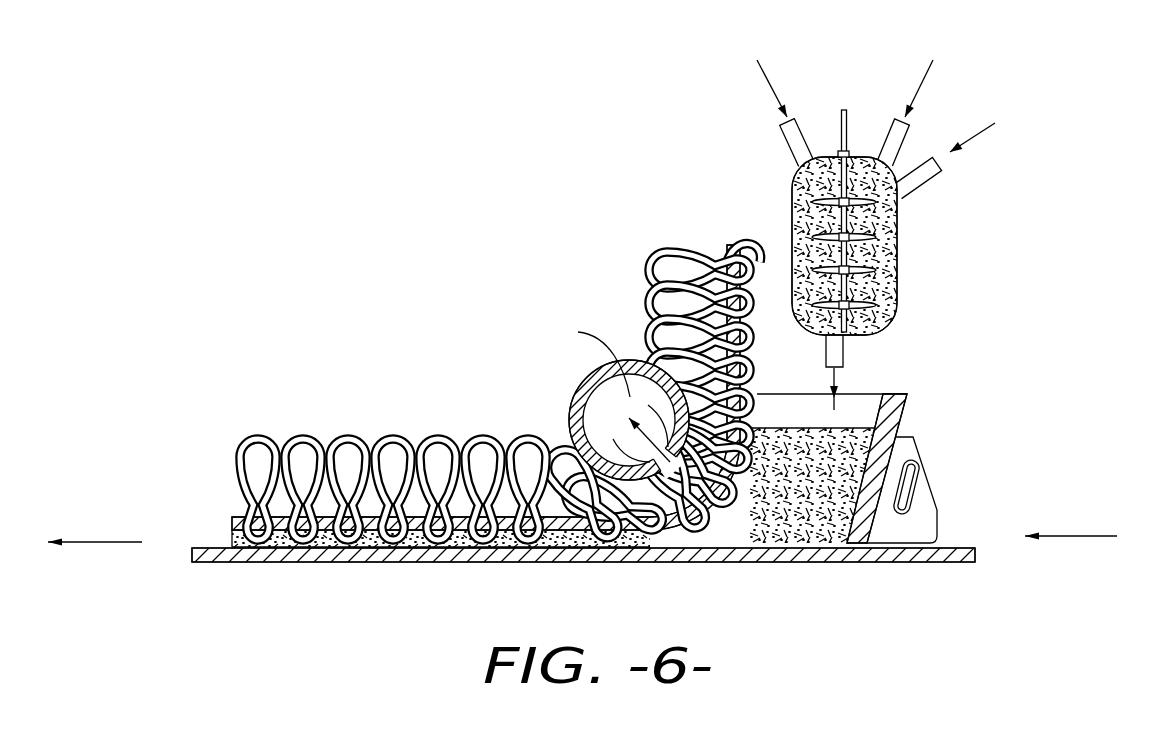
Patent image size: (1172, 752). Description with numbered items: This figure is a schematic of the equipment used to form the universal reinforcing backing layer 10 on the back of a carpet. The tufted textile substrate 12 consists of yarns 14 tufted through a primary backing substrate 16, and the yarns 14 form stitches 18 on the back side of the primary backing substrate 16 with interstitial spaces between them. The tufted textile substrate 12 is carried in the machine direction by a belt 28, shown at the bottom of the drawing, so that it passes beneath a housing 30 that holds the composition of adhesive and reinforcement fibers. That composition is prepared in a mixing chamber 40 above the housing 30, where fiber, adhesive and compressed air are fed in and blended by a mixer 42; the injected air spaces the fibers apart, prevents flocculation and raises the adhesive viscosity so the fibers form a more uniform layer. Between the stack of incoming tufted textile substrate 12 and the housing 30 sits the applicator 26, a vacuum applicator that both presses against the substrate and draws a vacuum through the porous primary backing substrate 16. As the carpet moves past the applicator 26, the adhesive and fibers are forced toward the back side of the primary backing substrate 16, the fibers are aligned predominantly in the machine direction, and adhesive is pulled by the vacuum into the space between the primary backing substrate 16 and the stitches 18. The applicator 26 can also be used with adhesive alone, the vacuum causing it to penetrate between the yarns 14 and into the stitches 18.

The reinforcing backing layer 10 is at (227, 537).
The tufted textile substrate 12 is at (760, 228).
The yarns 14 is at (393, 437).
The primary backing substrate 16 is at (230, 525).
The stitches 18 is at (377, 548).
The applicator 26 is at (580, 390).
The belt 28 is at (783, 562).
The housing 30 is at (903, 417).
The mixing chamber 40 is at (895, 292).
The mixer 42 is at (880, 238).